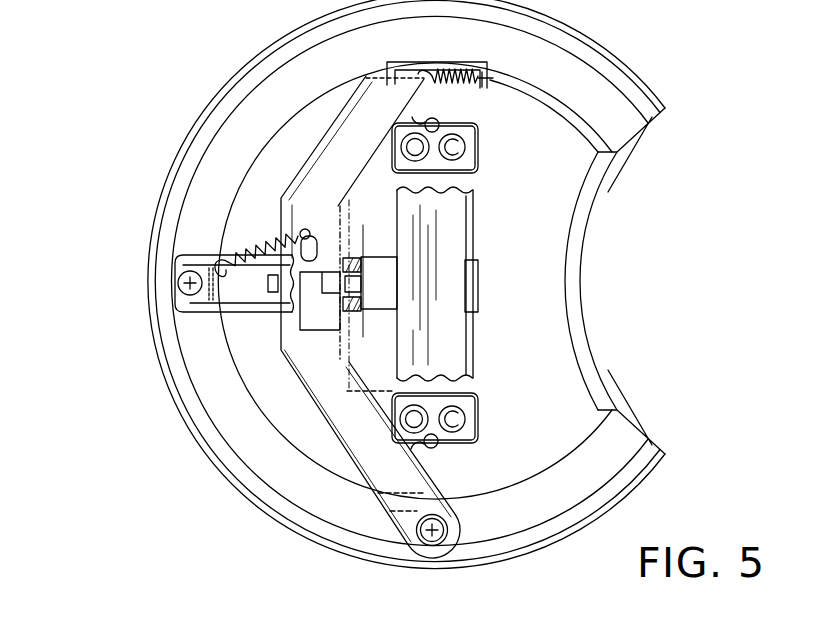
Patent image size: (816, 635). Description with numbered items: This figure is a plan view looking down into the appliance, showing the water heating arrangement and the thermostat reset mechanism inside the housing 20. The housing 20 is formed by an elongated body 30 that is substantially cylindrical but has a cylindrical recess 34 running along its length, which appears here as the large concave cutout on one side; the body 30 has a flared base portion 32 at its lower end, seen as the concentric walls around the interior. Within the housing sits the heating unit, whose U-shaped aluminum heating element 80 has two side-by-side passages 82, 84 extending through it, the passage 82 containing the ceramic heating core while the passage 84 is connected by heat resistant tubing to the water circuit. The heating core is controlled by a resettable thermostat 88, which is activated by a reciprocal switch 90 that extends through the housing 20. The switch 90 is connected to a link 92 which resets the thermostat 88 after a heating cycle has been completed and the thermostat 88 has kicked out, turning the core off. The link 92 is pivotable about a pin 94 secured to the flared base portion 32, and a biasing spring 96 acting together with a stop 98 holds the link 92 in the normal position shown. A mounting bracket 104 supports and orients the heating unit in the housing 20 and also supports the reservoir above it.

The housing 20 is at (160, 103).
The elongated body 30 is at (596, 194).
The flared base portion 32 is at (287, 78).
The cylindrical recess 34 is at (660, 316).
The heating element 80 is at (450, 226).
The passage 82 is at (460, 148).
The passage 84 is at (418, 158).
The resettable thermostat 88 is at (375, 270).
The reciprocal switch 90 is at (447, 58).
The link 92 is at (380, 113).
The pin 94 is at (420, 545).
The biasing spring 96 is at (262, 250).
The stop 98 is at (268, 312).
The mounting bracket 104 is at (474, 417).